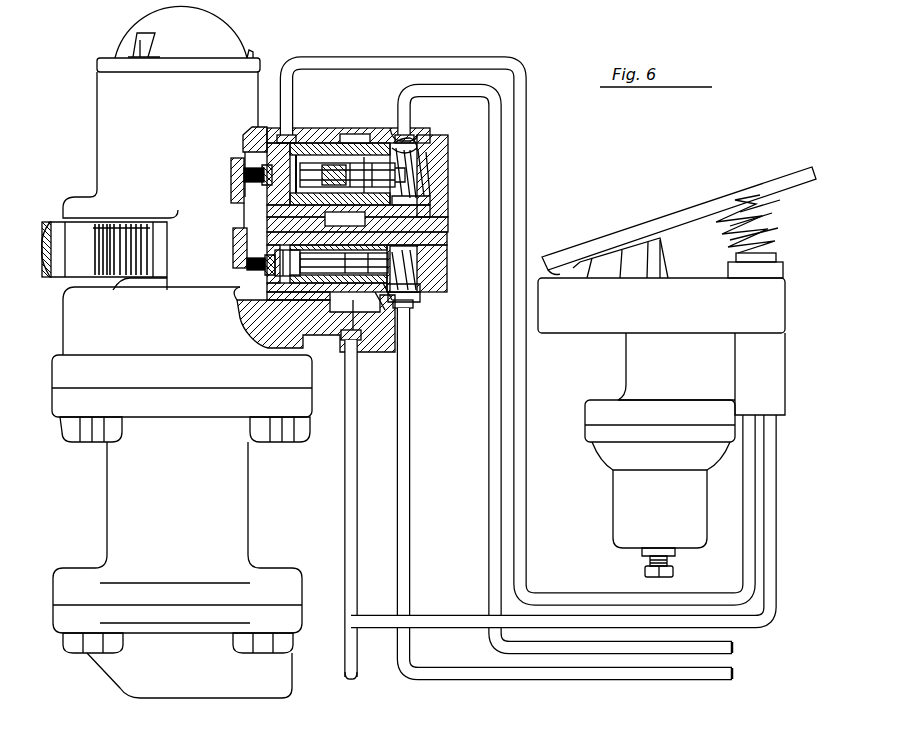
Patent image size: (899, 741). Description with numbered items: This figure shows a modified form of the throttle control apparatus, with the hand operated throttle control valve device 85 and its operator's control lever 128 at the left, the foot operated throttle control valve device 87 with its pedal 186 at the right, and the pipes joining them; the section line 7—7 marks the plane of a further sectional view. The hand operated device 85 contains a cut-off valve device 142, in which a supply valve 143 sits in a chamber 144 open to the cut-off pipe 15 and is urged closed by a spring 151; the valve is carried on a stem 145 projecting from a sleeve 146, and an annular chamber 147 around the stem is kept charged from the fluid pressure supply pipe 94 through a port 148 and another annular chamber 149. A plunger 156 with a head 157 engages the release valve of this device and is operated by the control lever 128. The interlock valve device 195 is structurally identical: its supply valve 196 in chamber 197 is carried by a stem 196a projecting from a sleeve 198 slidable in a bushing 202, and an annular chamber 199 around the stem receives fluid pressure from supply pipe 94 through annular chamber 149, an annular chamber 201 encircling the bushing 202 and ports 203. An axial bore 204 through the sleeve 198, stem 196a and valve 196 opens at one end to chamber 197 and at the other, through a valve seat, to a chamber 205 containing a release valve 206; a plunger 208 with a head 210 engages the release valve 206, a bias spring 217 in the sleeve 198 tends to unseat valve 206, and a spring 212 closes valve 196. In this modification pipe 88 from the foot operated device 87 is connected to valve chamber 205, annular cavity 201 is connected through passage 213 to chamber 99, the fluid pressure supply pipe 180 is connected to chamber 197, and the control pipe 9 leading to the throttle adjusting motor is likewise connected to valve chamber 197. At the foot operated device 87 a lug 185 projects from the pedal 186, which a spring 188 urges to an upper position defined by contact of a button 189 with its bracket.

The section line 7 is at (257, 164).
The control pipe 9 is at (494, 530).
The cut-off pipe 15 is at (406, 565).
The hand operated throttle control valve device 85 is at (106, 503).
The foot operated throttle control valve device 87 is at (612, 508).
The pipe 88 is at (521, 118).
The fluid pressure supply pipe 94 is at (344, 670).
The chamber 99 is at (255, 316).
The operator's control lever 128 is at (58, 262).
The cut-off valve device 142 is at (446, 273).
The supply valve 143 is at (440, 252).
The chamber 144 is at (412, 290).
The stem 145 is at (393, 298).
The sleeve 146 is at (265, 275).
The annular chamber 147 is at (348, 300).
The port 148 is at (378, 290).
The annular chamber 149 is at (357, 312).
The spring 151 is at (442, 285).
The plunger 156 is at (262, 262).
The head 157 is at (275, 240).
The fluid pressure supply pipe 180 is at (558, 521).
The lug 185 is at (662, 262).
The pedal 186 is at (762, 192).
The spring 188 is at (782, 229).
The button 189 is at (556, 276).
The interlock valve device 195 is at (356, 125).
The supply valve 196 is at (430, 150).
The stem 196a is at (384, 150).
The supply valve chamber 197 is at (424, 199).
The sleeve 198 is at (300, 146).
The annular chamber 199 is at (338, 150).
The annular chamber 201 is at (392, 226).
The bushing 202 is at (420, 145).
The ports 203 is at (432, 210).
The axial bore 204 is at (437, 160).
The chamber 205 is at (265, 128).
The release valve 206 is at (292, 132).
The plunger 208 is at (246, 172).
The head 210 is at (262, 182).
The spring 212 is at (432, 174).
The passage 213 is at (278, 294).
The bias spring 217 is at (330, 150).